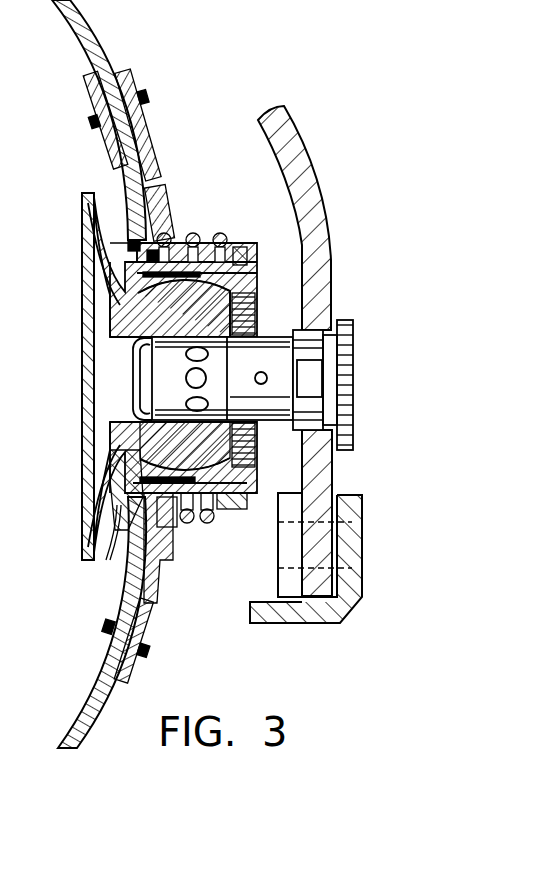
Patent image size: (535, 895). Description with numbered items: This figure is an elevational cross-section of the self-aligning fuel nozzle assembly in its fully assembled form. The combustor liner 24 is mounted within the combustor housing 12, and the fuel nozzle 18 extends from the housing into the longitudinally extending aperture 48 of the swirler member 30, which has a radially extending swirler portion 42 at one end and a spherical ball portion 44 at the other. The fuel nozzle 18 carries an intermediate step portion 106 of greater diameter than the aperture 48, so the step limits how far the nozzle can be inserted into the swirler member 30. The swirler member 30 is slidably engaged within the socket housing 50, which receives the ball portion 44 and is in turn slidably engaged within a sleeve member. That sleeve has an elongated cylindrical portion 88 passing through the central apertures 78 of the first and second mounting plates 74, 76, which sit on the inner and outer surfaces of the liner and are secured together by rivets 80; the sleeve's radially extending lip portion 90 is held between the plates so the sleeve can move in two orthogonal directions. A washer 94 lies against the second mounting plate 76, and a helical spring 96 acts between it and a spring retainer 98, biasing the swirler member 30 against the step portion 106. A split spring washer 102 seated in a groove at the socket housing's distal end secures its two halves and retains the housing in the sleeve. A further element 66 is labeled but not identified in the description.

The combustor housing 12 is at (322, 168).
The fuel nozzle 18 is at (330, 378).
The combustor liner 24 is at (92, 33).
The swirler member 30 is at (83, 512).
The swirler portion 42 is at (80, 545).
The ball portion 44 is at (153, 446).
The longitudinally extending aperture 48 is at (205, 337).
The socket housing 50 is at (108, 550).
The housing wall 66 is at (130, 278).
The first mounting plate 74 is at (115, 143).
The second mounting plate 76 is at (150, 147).
The central apertures 78 is at (148, 236).
The rivets 80 is at (153, 100).
The elongated cylindrical portion 88 is at (124, 293).
The lip portion 90 is at (131, 196).
The washer 94 is at (170, 198).
The helical spring 96 is at (196, 232).
The spring retainer 98 is at (222, 232).
The split spring washer 102 is at (246, 256).
The intermediate step portion 106 is at (252, 335).